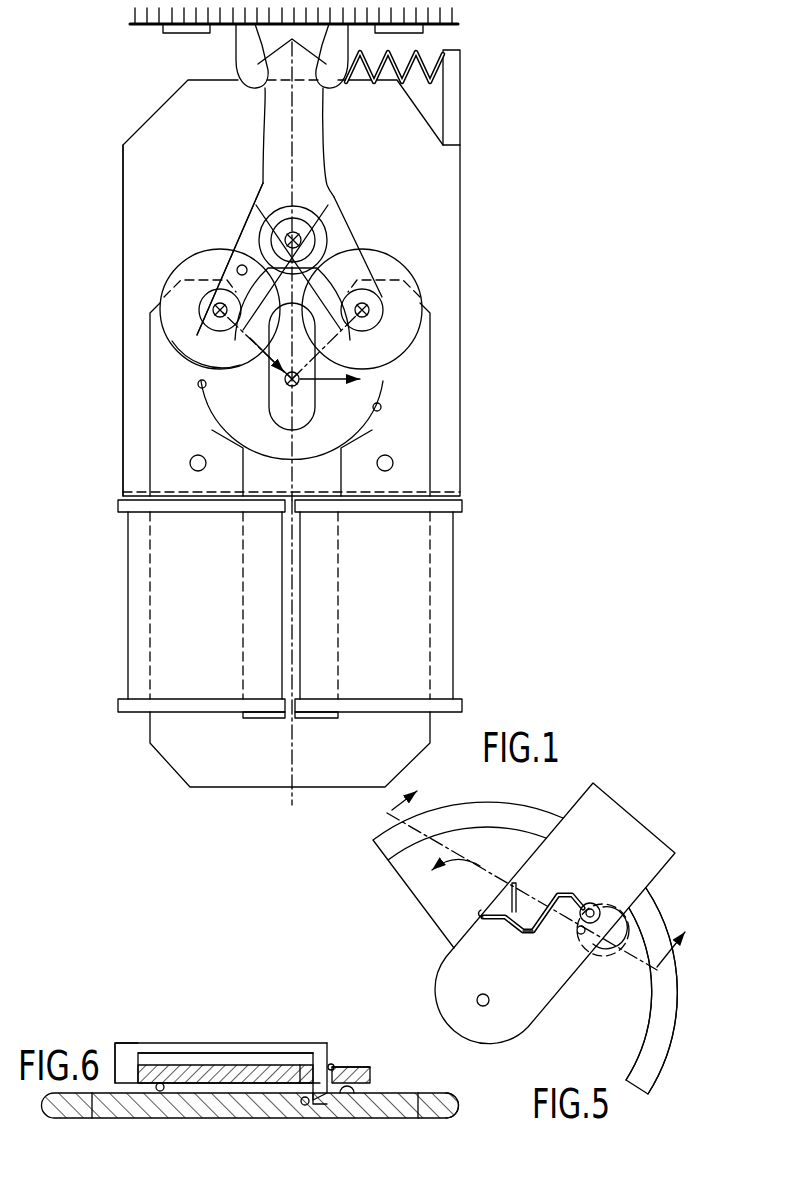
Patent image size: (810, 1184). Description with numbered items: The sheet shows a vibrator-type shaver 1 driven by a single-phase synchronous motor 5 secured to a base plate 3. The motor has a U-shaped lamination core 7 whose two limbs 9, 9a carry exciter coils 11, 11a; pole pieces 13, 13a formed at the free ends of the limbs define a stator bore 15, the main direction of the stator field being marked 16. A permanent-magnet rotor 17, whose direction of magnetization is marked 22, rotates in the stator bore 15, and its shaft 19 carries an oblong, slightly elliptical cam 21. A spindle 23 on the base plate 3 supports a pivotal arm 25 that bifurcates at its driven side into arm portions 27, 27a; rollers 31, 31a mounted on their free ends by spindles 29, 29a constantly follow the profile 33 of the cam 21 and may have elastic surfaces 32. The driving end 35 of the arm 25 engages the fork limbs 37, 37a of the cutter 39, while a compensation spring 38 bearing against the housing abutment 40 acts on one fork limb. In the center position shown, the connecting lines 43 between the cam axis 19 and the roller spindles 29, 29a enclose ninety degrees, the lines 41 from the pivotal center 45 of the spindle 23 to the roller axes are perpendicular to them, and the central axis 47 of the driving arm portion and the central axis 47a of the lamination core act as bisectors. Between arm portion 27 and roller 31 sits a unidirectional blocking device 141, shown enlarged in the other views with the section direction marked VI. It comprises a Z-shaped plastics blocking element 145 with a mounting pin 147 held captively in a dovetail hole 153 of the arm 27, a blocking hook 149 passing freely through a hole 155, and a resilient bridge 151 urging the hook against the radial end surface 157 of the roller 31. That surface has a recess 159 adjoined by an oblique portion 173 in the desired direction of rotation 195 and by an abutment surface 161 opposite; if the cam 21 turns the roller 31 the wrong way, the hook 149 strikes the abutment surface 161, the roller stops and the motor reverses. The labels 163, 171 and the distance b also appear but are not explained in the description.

In FIG. 1, the positioning device 1 is at (115, 262).
In FIG. 1, the base plate 3 is at (452, 210).
In FIG. 1, the single-phase synchronous motor 5 is at (438, 473).
In FIG. 1, the U-shaped lamination core 7 is at (415, 483).
In FIG. 1, the limb 9 is at (170, 413).
In FIG. 1, the limb 9a is at (422, 434).
In FIG. 1, the exciter coil 11 is at (138, 588).
In FIG. 1, the exciter coil 11a is at (442, 618).
In FIG. 1, the pole piece 13 is at (198, 386).
In FIG. 1, the pole piece 13a is at (381, 408).
In FIG. 1, the stator bore 15 is at (220, 426).
In FIG. 1, the main direction of the stator field 16 is at (362, 383).
In FIG. 1, the permanent-magnet rotor 17 is at (278, 445).
In FIG. 1, the shaft 19 is at (313, 445).
In FIG. 1, the cam 21 is at (300, 384).
In FIG. 1, the direction of magnetization 22 is at (279, 365).
In FIG. 1, the spindle 23 is at (318, 222).
In FIG. 1, the pivotal arm 25 is at (325, 158).
In FIG. 1, the arm portion 27 is at (232, 268).
In FIG. 5, the arm portion 27 is at (637, 835).
In FIG. 6, the arm portion 27 is at (371, 1075).
In FIG. 1, the arm portion 27a is at (374, 258).
In FIG. 1, the spindle 29 is at (200, 302).
In FIG. 1, the spindle 29a is at (376, 300).
In FIG. 1, the roller 31 is at (188, 268).
In FIG. 5, the roller 31 is at (618, 957).
In FIG. 6, the roller 31 is at (228, 1110).
In FIG. 1, the roller 31a is at (378, 263).
In FIG. 1, the elastic surfaces 32 is at (193, 366).
In FIG. 5, the elastic surfaces 32 is at (662, 1010).
In FIG. 6, the elastic surfaces 32 is at (430, 1119).
In FIG. 1, the profile 33 is at (282, 421).
In FIG. 1, the driving end 35 is at (270, 70).
In FIG. 1, the fork limb 37 is at (240, 36).
In FIG. 1, the fork limb 37a is at (338, 82).
In FIG. 1, the compensation spring 38 is at (391, 78).
In FIG. 1, the cutter 39 is at (130, 22).
In FIG. 1, the abutment 40 is at (452, 107).
In FIG. 1, the connecting lines 41 is at (258, 203).
In FIG. 1, the connecting lines 43 is at (312, 350).
In FIG. 1, the pivotal center 45 is at (295, 232).
In FIG. 1, the central axis 47 is at (290, 125).
In FIG. 1, the central axis 47a is at (293, 603).
In FIG. 1, the unidirectional blocking device 141 is at (226, 272).
In FIG. 5, the unidirectional blocking device 141 is at (522, 939).
In FIG. 6, the unidirectional blocking device 141 is at (452, 1126).
In FIG. 5, the blocking element 145 is at (560, 886).
In FIG. 6, the blocking element 145 is at (172, 1036).
In FIG. 5, the mounting pin 147 is at (490, 912).
In FIG. 6, the mounting pin 147 is at (128, 1057).
In FIG. 5, the blocking hook 149 is at (594, 906).
In FIG. 6, the blocking hook 149 is at (323, 1050).
In FIG. 5, the resilient bridge 151 is at (533, 934).
In FIG. 6, the resilient bridge 151 is at (243, 1050).
In FIG. 5, the dovetail hole 153 is at (516, 889).
In FIG. 5, the hole 155 is at (600, 950).
In FIG. 6, the hole 155 is at (345, 1066).
In FIG. 5, the radial end surface 157 is at (655, 1047).
In FIG. 6, the radial end surface 157 is at (161, 1092).
In FIG. 5, the recess 159 is at (600, 912).
In FIG. 6, the recess 159 is at (328, 1106).
In FIG. 5, the abutment surface 161 is at (588, 926).
In FIG. 6, the abutment surface 161 is at (305, 1106).
In FIG. 5, the projection 163 is at (653, 979).
In FIG. 6, the projection 163 is at (350, 1096).
In FIG. 6, the head 171 is at (334, 1064).
In FIG. 6, the oblique portion 173 is at (298, 1068).
In FIG. 5, the arrow 195 is at (462, 864).
In FIG. 1, the distance b is at (252, 414).
In FIG. 5, the section line VI is at (446, 790).